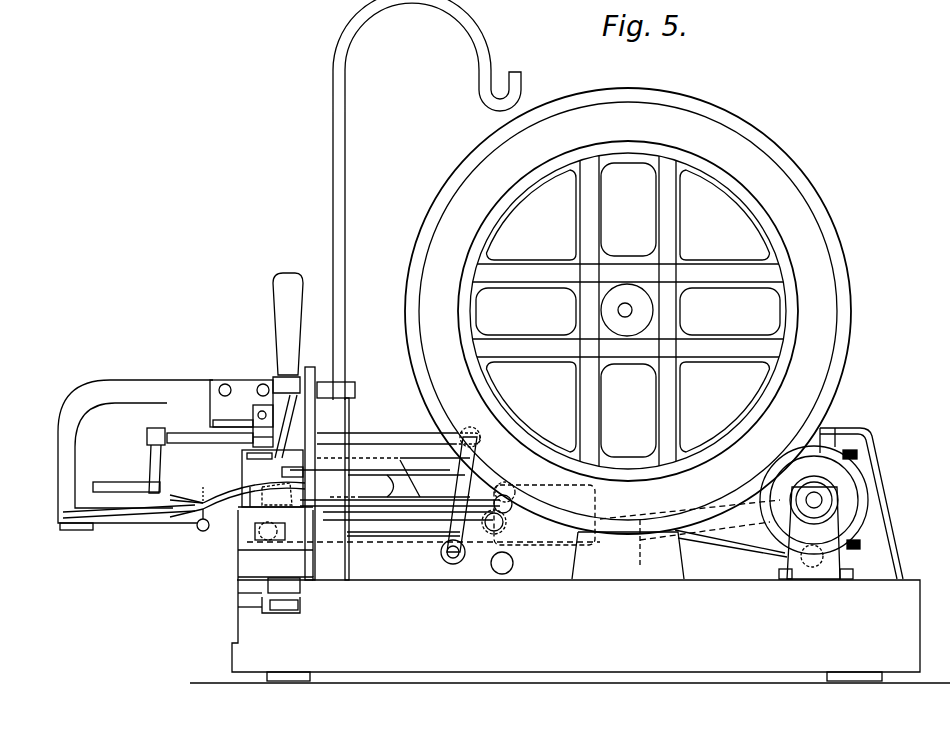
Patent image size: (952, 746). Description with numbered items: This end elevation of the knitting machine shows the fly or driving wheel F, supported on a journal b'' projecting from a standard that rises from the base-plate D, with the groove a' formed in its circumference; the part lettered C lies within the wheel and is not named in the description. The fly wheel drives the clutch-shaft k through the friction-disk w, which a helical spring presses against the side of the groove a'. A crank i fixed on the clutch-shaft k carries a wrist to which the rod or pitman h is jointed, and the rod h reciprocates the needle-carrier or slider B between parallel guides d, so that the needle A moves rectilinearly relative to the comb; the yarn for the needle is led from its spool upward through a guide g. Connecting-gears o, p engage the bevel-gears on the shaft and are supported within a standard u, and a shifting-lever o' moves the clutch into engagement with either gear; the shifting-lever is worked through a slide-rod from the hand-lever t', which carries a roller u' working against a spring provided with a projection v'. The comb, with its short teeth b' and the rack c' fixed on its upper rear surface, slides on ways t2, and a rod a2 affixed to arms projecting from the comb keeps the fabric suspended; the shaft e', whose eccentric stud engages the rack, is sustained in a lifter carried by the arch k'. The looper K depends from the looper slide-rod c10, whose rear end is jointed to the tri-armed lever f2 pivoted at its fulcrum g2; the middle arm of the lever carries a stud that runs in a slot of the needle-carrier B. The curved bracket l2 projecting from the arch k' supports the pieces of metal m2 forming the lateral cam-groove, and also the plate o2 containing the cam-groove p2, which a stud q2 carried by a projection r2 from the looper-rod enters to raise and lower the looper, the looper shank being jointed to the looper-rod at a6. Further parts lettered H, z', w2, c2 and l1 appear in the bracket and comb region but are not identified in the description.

The base-plate D is at (576, 595).
The guide or way t2 is at (275, 540).
The roller u' is at (269, 605).
The projection v' is at (280, 605).
The arch k' is at (330, 473).
The guide g is at (427, 200).
The fly or driving wheel F is at (628, 311).
The wheel spokes C is at (628, 311).
The journal b'' is at (627, 310).
The curved bracket l2 is at (135, 455).
The slide bar l1 is at (129, 515).
The hand-lever t' is at (288, 365).
The plate o2 is at (241, 403).
The cam-groove p2 is at (233, 424).
The stud q2 is at (263, 426).
The projection r2 is at (263, 443).
The connecting bar c2 is at (210, 437).
The joint a6 is at (156, 460).
The piece of metal forming cam-groove m2 is at (126, 487).
The needle A is at (237, 499).
The rod a2 is at (209, 521).
The looper K is at (186, 493).
The comb teeth b' is at (202, 489).
The head H is at (272, 478).
The rack c' is at (292, 472).
The block z' is at (277, 494).
The groove a' is at (264, 497).
The screw w2 is at (259, 456).
The looper slide-rod c10 is at (399, 438).
The shaft e' is at (380, 464).
The needle-carrier or slider B is at (400, 480).
The parallel guides d is at (400, 504).
The shifting-lever o' is at (498, 520).
The fulcrum g2 is at (460, 495).
The tri-armed lever f2 is at (528, 528).
The rod or pitman h is at (693, 528).
The friction-disk w is at (814, 500).
The clutch-shaft k is at (814, 500).
The crank i is at (816, 533).
The standard u is at (861, 503).
The connecting-gear o is at (849, 449).
The connecting-gear p is at (854, 549).